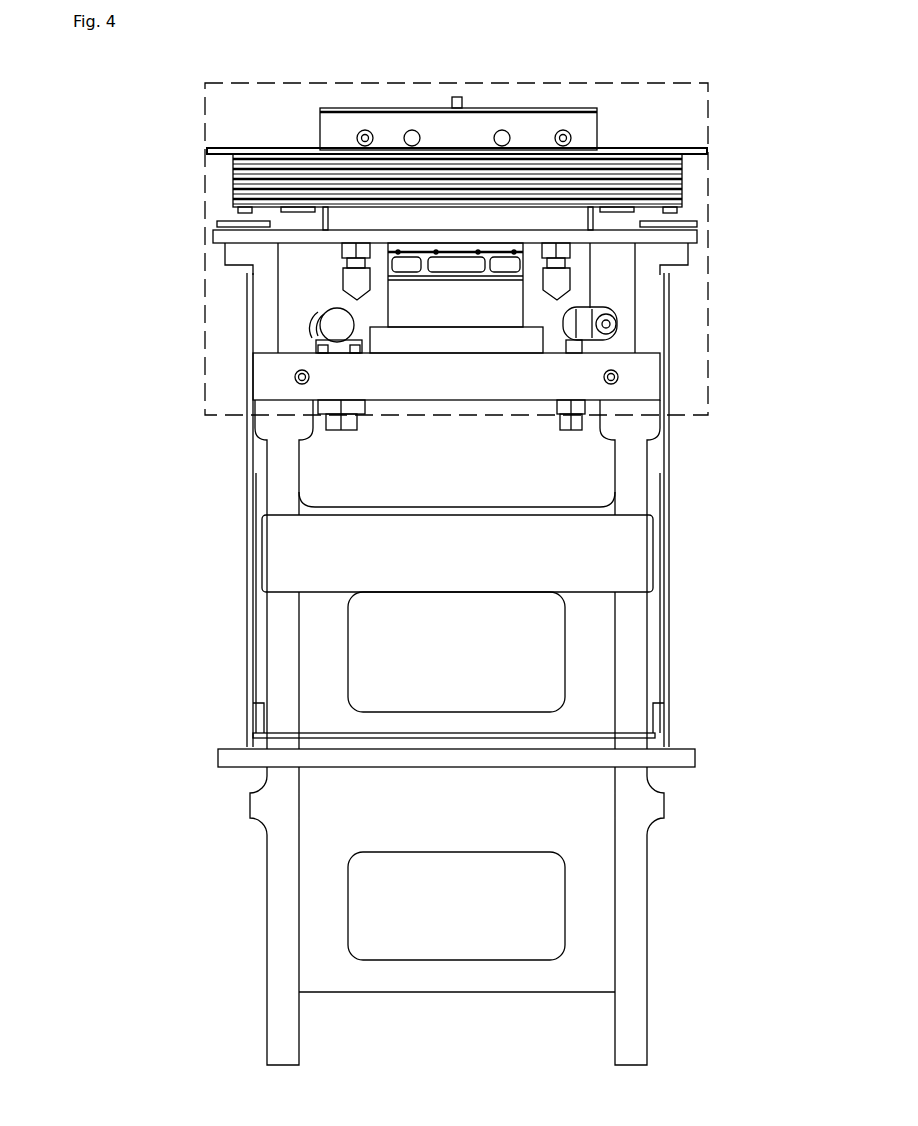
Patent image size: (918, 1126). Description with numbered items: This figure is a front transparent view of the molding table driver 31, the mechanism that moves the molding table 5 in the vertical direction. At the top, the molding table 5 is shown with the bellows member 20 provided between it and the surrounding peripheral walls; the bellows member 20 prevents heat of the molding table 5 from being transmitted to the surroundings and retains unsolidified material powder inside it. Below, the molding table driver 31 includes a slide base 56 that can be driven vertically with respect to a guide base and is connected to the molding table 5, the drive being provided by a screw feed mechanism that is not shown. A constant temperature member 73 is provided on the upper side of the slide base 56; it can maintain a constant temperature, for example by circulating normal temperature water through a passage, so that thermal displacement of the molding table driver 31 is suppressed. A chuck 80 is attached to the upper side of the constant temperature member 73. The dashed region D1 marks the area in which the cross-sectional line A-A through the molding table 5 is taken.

The molding table 5 is at (548, 109).
The bellows member 20 is at (233, 180).
The molding table driver 31 is at (676, 58).
The region D1 is at (710, 93).
The slide base 56 is at (277, 620).
The constant temperature member 73 is at (483, 392).
The chuck 80 is at (420, 348).